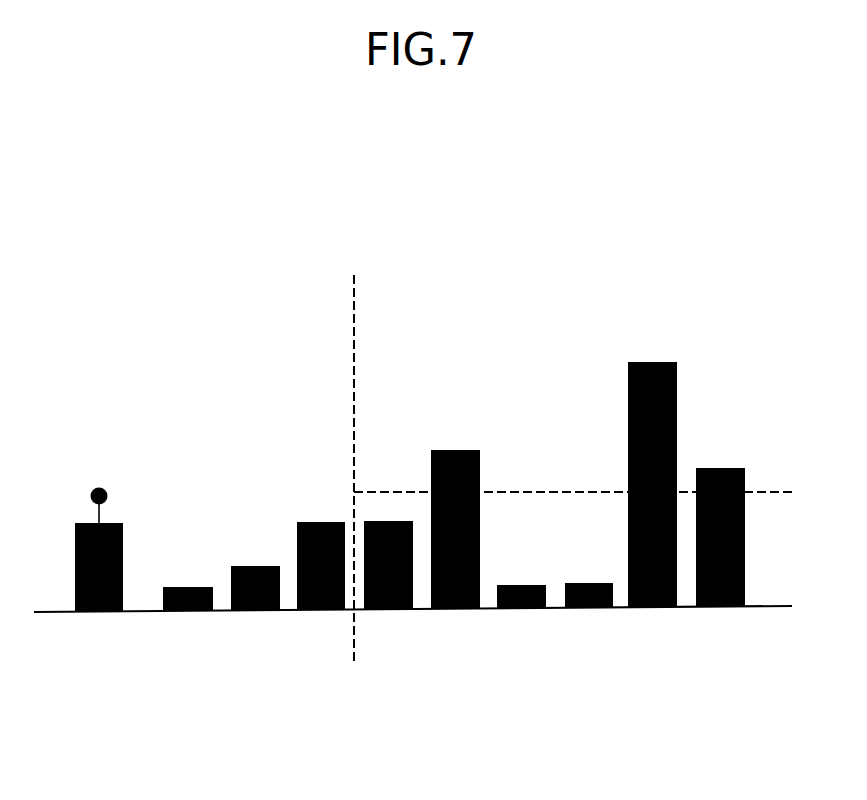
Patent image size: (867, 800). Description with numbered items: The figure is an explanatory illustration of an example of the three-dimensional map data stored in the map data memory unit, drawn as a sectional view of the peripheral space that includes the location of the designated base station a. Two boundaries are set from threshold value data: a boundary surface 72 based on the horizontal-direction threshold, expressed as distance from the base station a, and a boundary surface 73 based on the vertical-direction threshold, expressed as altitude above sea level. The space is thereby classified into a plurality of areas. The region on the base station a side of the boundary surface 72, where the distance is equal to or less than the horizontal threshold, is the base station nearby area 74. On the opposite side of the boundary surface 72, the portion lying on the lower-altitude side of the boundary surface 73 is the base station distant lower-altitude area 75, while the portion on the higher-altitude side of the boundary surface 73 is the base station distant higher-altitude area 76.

The designated base station a is at (105, 488).
The boundary surface 72 is at (357, 642).
The boundary surface 73 is at (535, 492).
The base station nearby area 74 is at (205, 460).
The base station distant lower-altitude area 75 is at (567, 552).
The base station distant higher-altitude area 76 is at (580, 395).